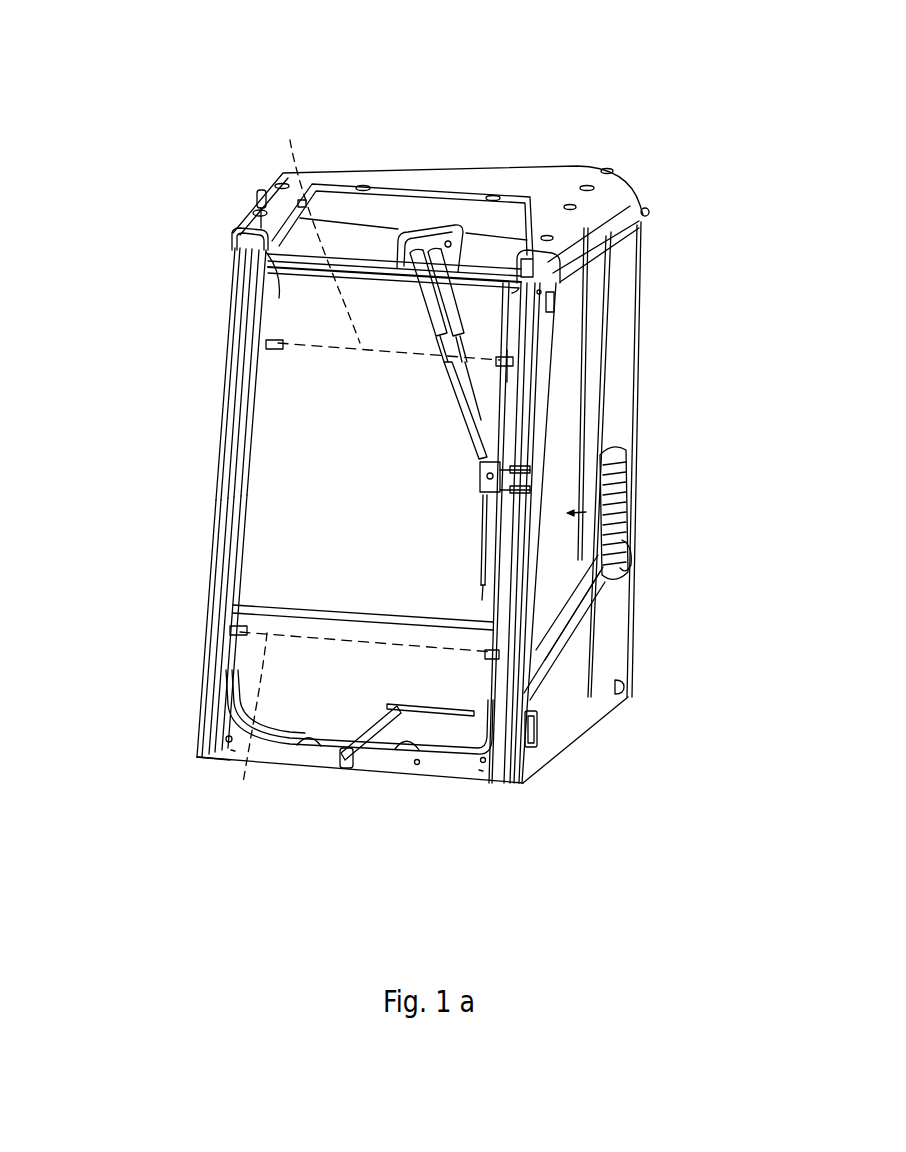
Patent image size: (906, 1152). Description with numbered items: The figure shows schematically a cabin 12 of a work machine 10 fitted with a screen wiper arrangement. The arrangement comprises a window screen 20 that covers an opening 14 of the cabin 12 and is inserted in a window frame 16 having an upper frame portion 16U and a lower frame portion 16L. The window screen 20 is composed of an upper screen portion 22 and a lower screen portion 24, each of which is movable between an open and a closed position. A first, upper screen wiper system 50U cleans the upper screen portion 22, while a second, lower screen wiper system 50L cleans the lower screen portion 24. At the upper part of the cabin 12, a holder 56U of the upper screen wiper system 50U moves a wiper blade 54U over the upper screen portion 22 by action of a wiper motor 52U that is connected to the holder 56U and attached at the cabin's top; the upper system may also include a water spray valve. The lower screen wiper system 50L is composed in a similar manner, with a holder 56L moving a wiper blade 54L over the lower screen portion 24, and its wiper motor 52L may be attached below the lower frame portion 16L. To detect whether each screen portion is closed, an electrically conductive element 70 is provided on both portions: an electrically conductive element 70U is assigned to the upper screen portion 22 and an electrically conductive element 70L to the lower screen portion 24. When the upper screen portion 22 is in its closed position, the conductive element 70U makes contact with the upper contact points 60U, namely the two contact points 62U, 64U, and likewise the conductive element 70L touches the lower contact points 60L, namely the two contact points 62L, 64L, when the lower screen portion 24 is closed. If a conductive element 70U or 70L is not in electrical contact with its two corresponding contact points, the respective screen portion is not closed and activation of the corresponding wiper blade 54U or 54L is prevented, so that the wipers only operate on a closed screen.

The work machine 10 is at (229, 130).
The cabin 12 is at (383, 186).
The opening 14 is at (250, 316).
The window frame 16 is at (212, 452).
The upper frame portion 16U is at (248, 397).
The lower frame portion 16L is at (228, 659).
The window screen 20 is at (298, 489).
The upper screen portion 22 is at (387, 485).
The lower screen portion 24 is at (352, 700).
The upper screen wiper system 50U is at (466, 310).
The lower screen wiper system 50L is at (343, 772).
The upper wiper motor 52U is at (432, 238).
The lower wiper motor 52L is at (360, 753).
The upper wiper blade 54U is at (494, 508).
The lower wiper blade 54L is at (397, 750).
The upper holder 56U is at (468, 420).
The lower holder 56L is at (453, 718).
The upper contact points 60U is at (411, 330).
The first upper contact point 62U is at (265, 343).
The second upper contact point 64U is at (496, 362).
The lower contact points 60L is at (380, 637).
The first lower contact point 62L is at (238, 632).
The second lower contact point 64L is at (494, 653).
The electrically conductive element 70 is at (362, 462).
The upper electrically conductive element 70U is at (386, 232).
The lower electrically conductive element 70L is at (359, 726).